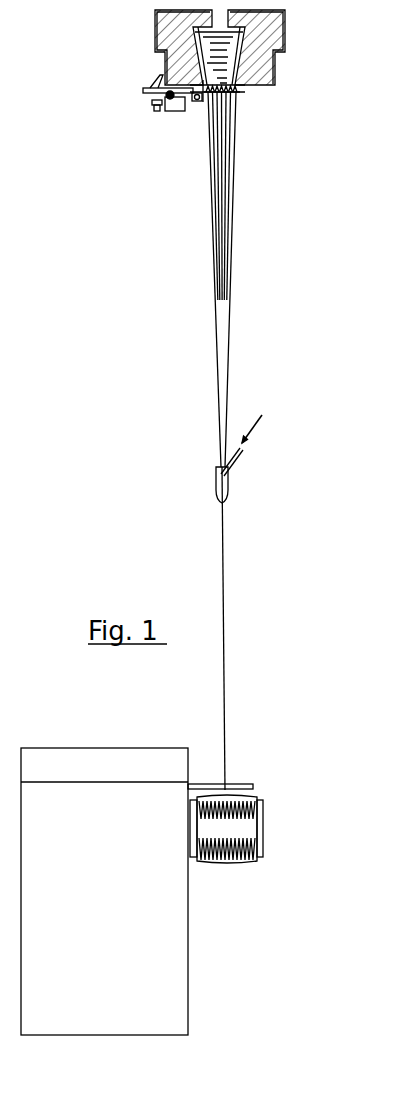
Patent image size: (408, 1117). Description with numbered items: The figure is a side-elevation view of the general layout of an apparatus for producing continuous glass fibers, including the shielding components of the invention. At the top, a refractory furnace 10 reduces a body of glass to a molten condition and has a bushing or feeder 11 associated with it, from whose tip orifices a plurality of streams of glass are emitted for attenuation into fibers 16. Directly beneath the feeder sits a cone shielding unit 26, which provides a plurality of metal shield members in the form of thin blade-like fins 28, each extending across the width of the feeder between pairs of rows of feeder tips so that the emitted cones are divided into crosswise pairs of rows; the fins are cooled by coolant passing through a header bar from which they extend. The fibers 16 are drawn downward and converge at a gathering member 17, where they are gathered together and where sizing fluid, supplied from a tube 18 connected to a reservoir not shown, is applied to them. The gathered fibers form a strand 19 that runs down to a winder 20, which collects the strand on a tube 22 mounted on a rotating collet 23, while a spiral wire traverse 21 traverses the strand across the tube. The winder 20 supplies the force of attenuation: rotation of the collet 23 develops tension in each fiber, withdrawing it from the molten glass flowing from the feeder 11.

The refractory furnace 10 is at (285, 30).
The bushing or feeder 11 is at (240, 88).
The blade-like fins 28 is at (238, 95).
The cone shielding unit 26 is at (176, 117).
The fibers 16 is at (213, 193).
The tube 18 is at (245, 460).
The gathering member 17 is at (228, 482).
The strand 19 is at (226, 636).
The winder 20 is at (88, 746).
The spiral wire traverse 21 is at (223, 789).
The rotating collet 23 is at (258, 798).
The tube 22 is at (255, 860).